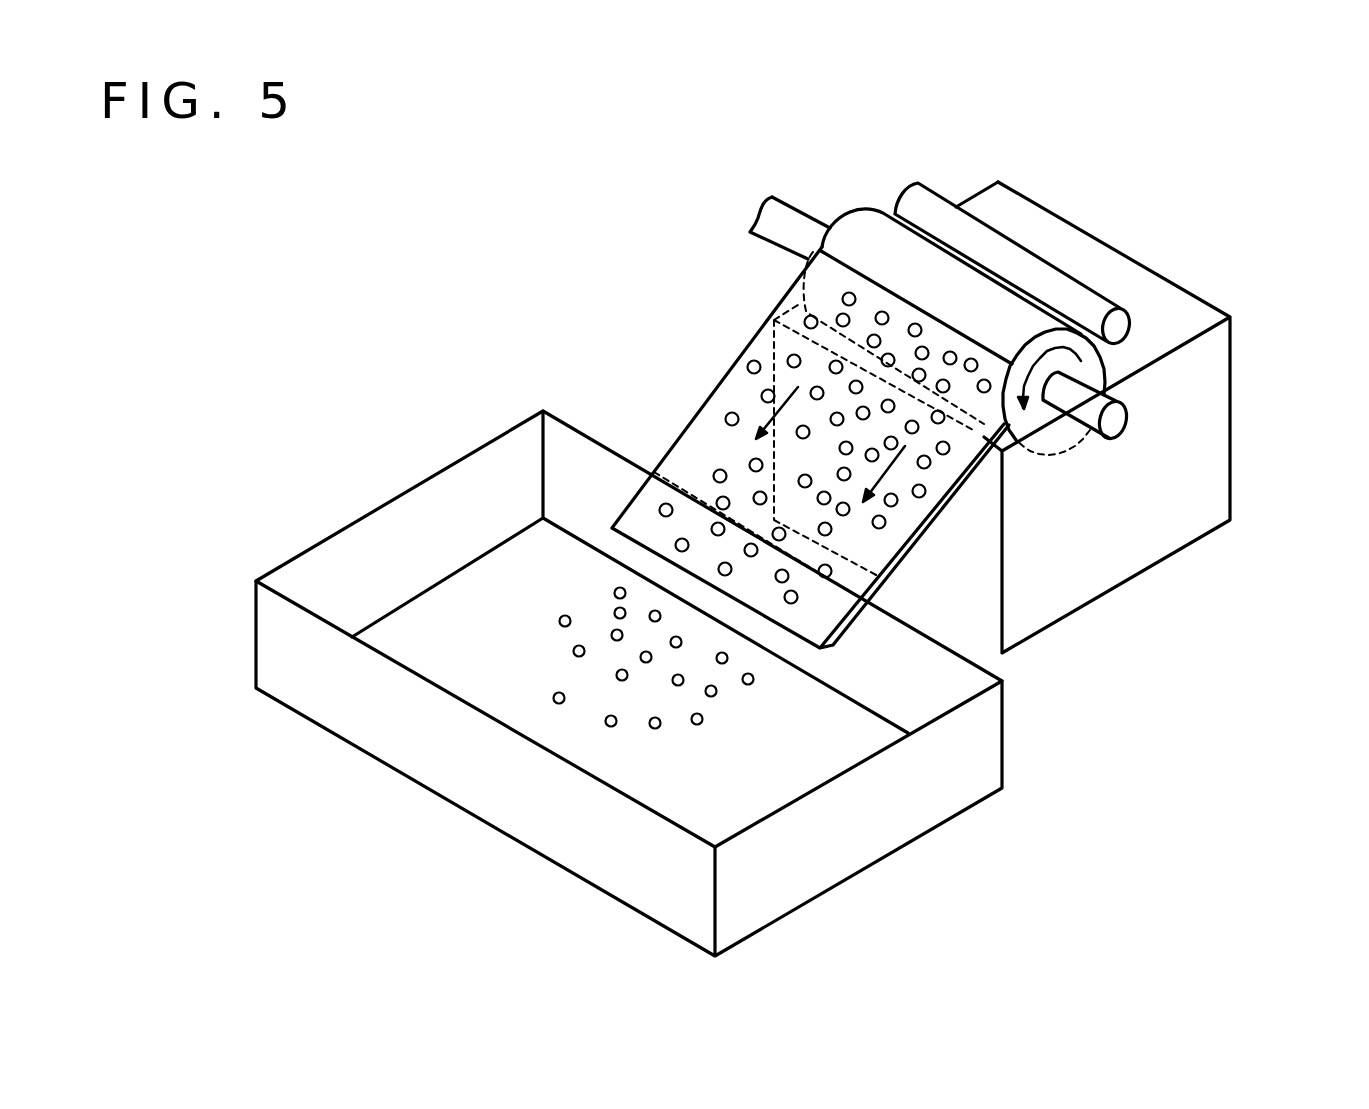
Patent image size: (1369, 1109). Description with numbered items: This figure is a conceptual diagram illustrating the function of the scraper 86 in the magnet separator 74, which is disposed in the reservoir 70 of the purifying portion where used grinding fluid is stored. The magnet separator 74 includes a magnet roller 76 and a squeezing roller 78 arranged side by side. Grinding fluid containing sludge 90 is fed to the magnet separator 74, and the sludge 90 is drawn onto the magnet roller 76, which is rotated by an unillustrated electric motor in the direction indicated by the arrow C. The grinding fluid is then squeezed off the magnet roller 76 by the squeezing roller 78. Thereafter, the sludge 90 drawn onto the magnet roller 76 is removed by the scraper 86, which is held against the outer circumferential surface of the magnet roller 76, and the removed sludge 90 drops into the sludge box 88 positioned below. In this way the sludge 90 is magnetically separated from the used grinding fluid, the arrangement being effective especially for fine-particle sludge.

The reservoir 70 is at (1211, 419).
The magnet separator 74 is at (886, 197).
The magnet roller 76 is at (856, 228).
The squeezing roller 78 is at (931, 207).
The scraper 86 is at (702, 434).
The sludge box 88 is at (987, 753).
The sludge 90 is at (701, 723).
The arrow indicating rotation direction C is at (1077, 330).